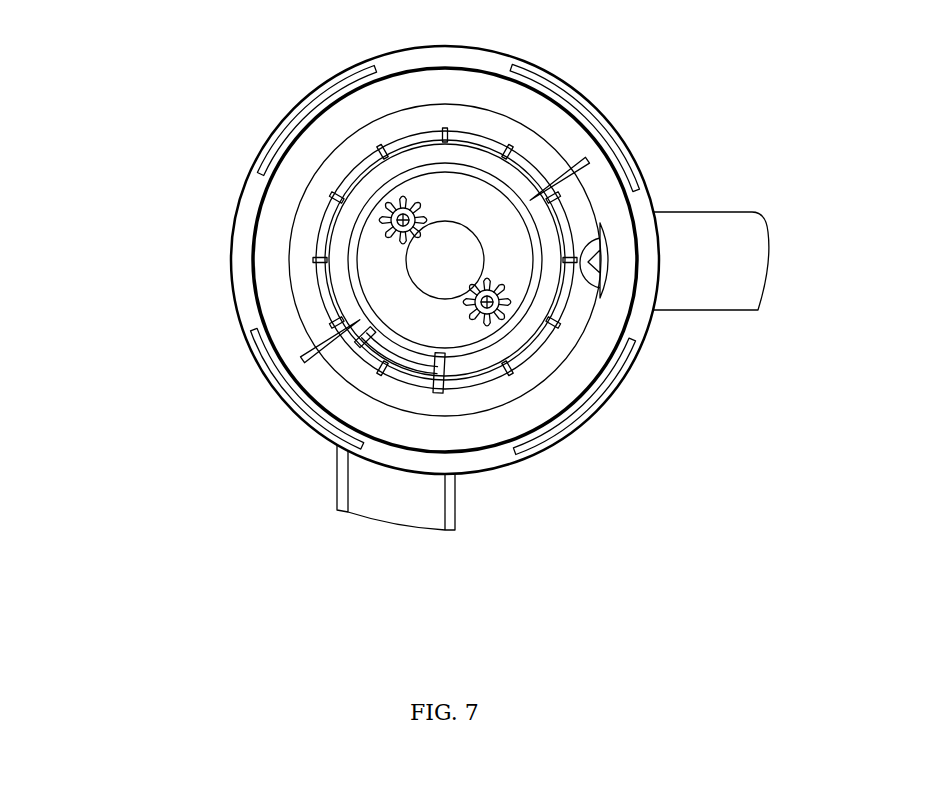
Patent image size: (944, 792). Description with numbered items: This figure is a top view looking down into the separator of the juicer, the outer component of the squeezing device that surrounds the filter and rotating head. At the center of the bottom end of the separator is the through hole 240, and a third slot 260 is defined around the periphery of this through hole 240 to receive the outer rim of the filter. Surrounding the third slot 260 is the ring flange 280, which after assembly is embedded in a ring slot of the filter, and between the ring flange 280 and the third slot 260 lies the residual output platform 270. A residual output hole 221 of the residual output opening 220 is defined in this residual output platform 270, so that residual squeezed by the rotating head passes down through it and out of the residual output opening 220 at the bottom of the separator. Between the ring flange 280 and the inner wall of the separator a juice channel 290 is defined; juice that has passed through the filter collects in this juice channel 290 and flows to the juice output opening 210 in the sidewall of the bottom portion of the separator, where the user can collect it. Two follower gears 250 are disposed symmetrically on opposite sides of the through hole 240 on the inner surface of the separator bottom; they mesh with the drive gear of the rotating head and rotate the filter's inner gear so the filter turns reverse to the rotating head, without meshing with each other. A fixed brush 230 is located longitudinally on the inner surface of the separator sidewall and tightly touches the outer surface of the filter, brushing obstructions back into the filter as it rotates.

The juice output opening 210 is at (738, 275).
The residual output opening 220 is at (382, 497).
The residual output hole 221 is at (398, 355).
The fixed brush 230 is at (578, 183).
The through hole 240 is at (450, 262).
The follower gear 250 is at (390, 220).
The third slot 260 is at (575, 182).
The residual output platform 270 is at (422, 155).
The ring flange 280 is at (572, 92).
The juice channel 290 is at (450, 122).